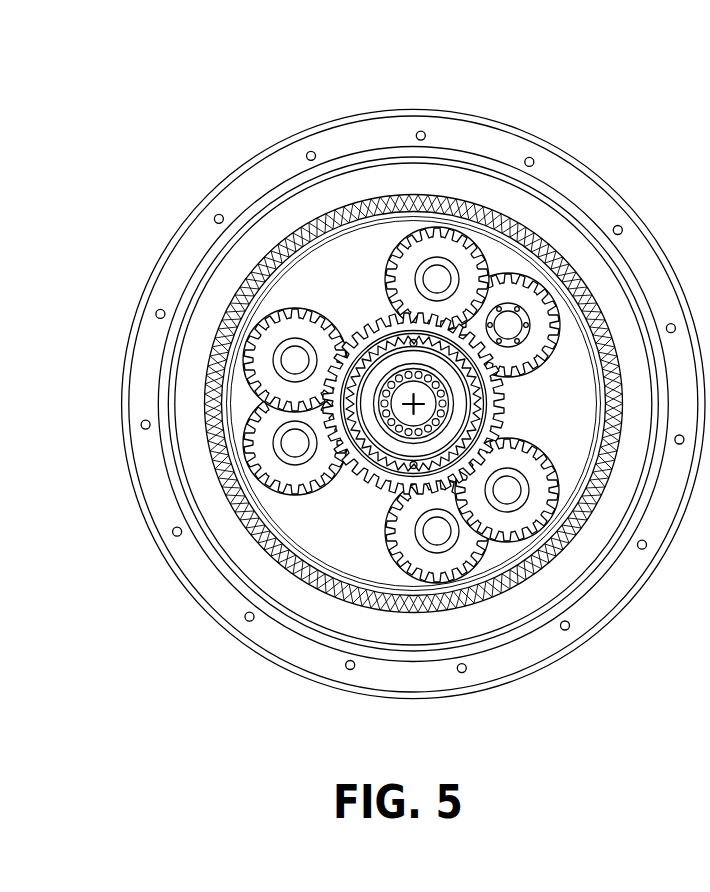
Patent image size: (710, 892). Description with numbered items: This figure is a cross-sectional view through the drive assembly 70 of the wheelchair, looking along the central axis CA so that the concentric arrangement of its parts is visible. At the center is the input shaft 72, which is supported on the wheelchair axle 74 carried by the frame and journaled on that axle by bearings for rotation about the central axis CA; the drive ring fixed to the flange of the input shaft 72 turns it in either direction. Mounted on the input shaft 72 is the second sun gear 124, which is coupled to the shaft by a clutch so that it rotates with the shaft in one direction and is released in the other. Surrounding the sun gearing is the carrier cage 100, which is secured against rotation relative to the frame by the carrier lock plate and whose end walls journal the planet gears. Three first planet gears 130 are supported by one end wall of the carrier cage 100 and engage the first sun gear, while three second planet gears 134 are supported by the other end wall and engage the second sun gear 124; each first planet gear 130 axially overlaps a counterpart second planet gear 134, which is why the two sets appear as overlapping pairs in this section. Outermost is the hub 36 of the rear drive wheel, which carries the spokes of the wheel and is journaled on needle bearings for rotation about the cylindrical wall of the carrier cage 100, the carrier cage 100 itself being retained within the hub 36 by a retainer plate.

The drive assembly 70 is at (360, 115).
The hub 36 is at (268, 157).
The carrier cage 100 is at (242, 308).
The input shaft 72 is at (387, 367).
The wheelchair axle 74 is at (422, 404).
The second sun gear 124 is at (352, 463).
The first planet gear 130 is at (522, 292).
The second planet gear 134 is at (453, 250).
The central axis CA is at (409, 412).